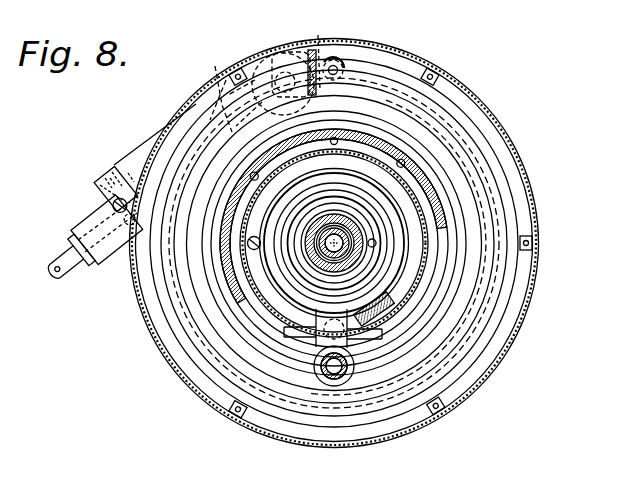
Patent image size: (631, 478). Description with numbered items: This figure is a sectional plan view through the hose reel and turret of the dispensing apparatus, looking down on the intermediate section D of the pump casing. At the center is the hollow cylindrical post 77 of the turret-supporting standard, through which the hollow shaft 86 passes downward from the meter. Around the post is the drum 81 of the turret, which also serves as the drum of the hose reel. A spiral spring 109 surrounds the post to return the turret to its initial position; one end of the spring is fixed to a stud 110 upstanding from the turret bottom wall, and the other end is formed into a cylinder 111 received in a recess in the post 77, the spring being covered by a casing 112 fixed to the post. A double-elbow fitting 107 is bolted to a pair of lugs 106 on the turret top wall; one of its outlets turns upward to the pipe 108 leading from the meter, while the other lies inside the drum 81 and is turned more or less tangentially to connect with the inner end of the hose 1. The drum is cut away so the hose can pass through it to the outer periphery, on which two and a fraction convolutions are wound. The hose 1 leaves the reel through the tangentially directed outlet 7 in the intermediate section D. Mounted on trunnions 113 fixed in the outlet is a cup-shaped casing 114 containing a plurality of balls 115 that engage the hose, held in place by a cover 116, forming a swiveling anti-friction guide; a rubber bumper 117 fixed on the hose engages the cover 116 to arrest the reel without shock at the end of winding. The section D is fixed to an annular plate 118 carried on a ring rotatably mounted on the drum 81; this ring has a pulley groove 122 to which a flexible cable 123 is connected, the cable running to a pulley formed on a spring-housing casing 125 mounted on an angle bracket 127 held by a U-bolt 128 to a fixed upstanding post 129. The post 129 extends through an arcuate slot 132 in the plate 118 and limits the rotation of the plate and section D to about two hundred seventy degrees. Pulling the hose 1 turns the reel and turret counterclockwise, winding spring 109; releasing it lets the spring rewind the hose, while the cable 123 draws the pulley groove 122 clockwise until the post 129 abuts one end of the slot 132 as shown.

The hose 1 is at (60, 257).
The tangential outlet 7 is at (104, 170).
The hollow cylindrical post 77 is at (395, 212).
The drum portion 81 is at (230, 357).
The hollow shaft 86 is at (352, 217).
The lugs 106 is at (382, 335).
The double-elbow fitting 107 is at (312, 345).
The pipe 108 is at (333, 381).
The spiral spring 109 is at (262, 300).
The stud 110 is at (248, 245).
The cylinder 111 is at (377, 243).
The casing 112 is at (392, 82).
The trunnions 113 is at (112, 206).
The cup-shaped casing 114 is at (130, 172).
The balls 115 is at (114, 176).
The cover 116 is at (118, 245).
The rubber bumper 117 is at (92, 203).
The annular plate 118 is at (496, 134).
The pulley groove 122 is at (194, 100).
The flexible cable 123 is at (209, 90).
The casing 125 is at (272, 56).
The angle bracket 127 is at (313, 48).
The U-bolt 128 is at (337, 60).
The fixed upstanding post 129 is at (375, 62).
The arcuate slot 132 is at (457, 110).
The intermediate section D is at (532, 201).